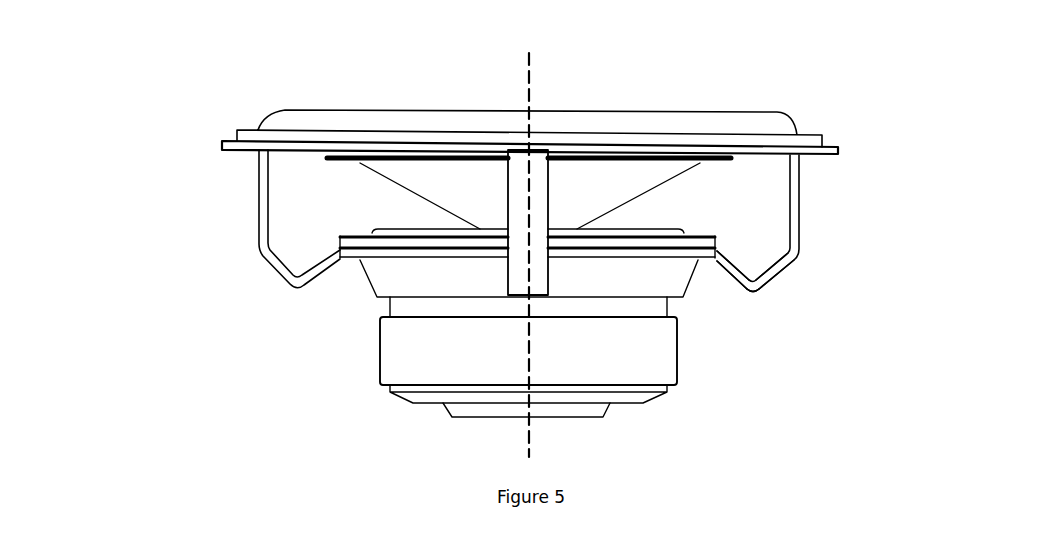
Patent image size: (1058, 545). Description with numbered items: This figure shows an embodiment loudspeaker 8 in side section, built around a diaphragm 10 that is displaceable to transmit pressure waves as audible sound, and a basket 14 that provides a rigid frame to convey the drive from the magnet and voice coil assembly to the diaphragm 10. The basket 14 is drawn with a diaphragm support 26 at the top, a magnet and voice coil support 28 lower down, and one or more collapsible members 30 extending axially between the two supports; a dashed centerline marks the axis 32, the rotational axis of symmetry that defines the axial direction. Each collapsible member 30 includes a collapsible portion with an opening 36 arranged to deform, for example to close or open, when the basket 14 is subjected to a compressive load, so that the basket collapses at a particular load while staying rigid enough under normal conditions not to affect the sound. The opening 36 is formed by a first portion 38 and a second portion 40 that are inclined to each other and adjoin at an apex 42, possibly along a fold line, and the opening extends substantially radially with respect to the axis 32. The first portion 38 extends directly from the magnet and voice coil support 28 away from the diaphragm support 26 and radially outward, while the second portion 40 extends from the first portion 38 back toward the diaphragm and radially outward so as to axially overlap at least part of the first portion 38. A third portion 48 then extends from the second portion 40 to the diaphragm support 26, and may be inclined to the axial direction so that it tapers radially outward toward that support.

The loudspeaker 8 is at (98, 181).
The diaphragm 10 is at (620, 178).
The basket 14 is at (211, 128).
The diaphragm support 26 is at (223, 142).
The magnet and voice coil support 28 is at (673, 260).
The collapsible member 30 is at (272, 272).
The axis 32 is at (532, 433).
The opening 36 is at (785, 247).
The first portion 38 is at (738, 288).
The second portion 40 is at (778, 285).
The apex 42 is at (760, 297).
The third portion 48 is at (800, 180).